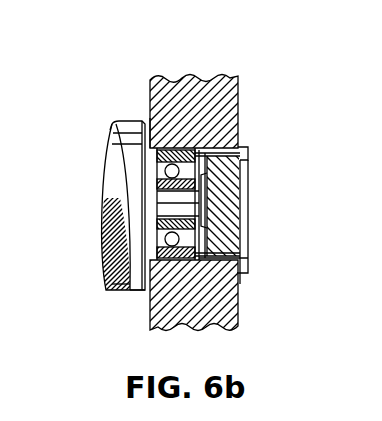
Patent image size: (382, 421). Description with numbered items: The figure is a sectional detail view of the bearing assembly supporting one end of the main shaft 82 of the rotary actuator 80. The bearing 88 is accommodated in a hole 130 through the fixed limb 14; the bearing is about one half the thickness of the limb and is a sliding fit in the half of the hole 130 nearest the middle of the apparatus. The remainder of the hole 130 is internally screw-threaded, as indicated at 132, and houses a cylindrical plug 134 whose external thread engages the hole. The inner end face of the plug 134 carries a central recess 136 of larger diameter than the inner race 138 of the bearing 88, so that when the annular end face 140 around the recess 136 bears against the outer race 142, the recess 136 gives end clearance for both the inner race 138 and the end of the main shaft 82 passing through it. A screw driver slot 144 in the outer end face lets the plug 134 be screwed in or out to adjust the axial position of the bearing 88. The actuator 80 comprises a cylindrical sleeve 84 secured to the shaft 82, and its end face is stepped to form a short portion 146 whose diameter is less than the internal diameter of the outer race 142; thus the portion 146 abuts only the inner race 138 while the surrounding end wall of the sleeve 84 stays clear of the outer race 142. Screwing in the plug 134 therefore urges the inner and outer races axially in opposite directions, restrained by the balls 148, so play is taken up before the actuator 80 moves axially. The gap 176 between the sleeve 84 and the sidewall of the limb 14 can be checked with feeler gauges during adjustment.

The fixed limb 14 is at (190, 93).
The rotary actuator 80 is at (100, 127).
The cylindrical sleeve 84 is at (111, 143).
The bearing 88 is at (141, 255).
The outer race 142 is at (128, 280).
The gap 176 is at (150, 110).
The hole 130 is at (156, 157).
The balls 148 is at (157, 183).
The short portion 146 is at (160, 206).
The inner race 138 is at (157, 231).
The main shaft 82 is at (247, 207).
The screw driver slot 144 is at (243, 185).
The screw thread 132 is at (243, 150).
The cylindrical plug 134 is at (248, 262).
The central recess 136 is at (203, 257).
The annular end face 140 is at (240, 284).